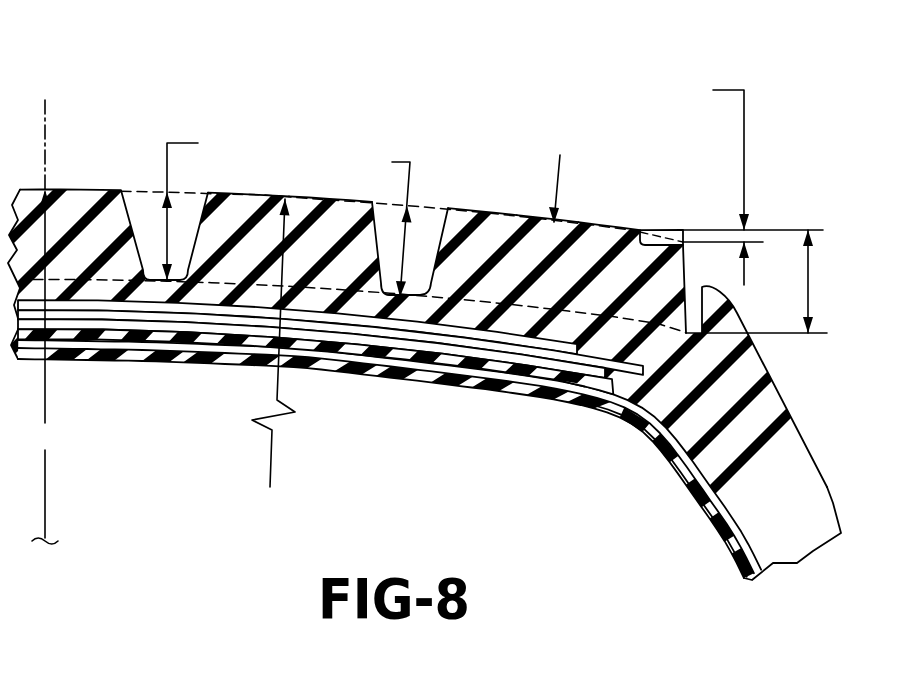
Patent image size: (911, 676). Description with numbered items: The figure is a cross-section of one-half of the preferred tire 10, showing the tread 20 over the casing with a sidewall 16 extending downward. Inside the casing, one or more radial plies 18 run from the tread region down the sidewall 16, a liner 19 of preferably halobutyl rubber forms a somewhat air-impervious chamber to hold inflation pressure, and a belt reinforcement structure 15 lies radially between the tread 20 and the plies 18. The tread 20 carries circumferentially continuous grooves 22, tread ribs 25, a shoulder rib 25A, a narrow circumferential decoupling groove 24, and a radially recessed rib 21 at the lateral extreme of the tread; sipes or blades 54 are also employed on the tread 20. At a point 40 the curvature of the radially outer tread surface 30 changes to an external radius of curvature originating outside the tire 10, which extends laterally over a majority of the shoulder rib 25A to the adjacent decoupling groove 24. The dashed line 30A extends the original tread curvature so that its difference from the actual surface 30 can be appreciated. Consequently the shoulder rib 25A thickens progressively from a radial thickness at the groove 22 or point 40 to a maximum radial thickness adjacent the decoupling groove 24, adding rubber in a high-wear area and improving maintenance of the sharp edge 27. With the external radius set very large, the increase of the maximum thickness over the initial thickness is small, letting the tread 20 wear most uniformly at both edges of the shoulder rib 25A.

The tire 10 is at (455, 347).
The belt reinforcement structure 15 is at (430, 340).
The sidewall 16 is at (830, 507).
The radial plies 18 is at (723, 500).
The liner 19 is at (662, 452).
The tread 20 is at (103, 175).
The radially recessed rib 21 is at (731, 313).
The circumferentially continuous groove 22 is at (422, 241).
The narrow circumferential decoupling groove 24 is at (693, 308).
The tread rib 25 is at (230, 213).
The shoulder rib 25A is at (493, 237).
The sharp edge 27 is at (683, 232).
The radially outer tread surface 30 is at (320, 205).
The dashed line 30A is at (615, 228).
The point of curvature change 40 is at (463, 209).
The sipe or blade 54 is at (658, 235).